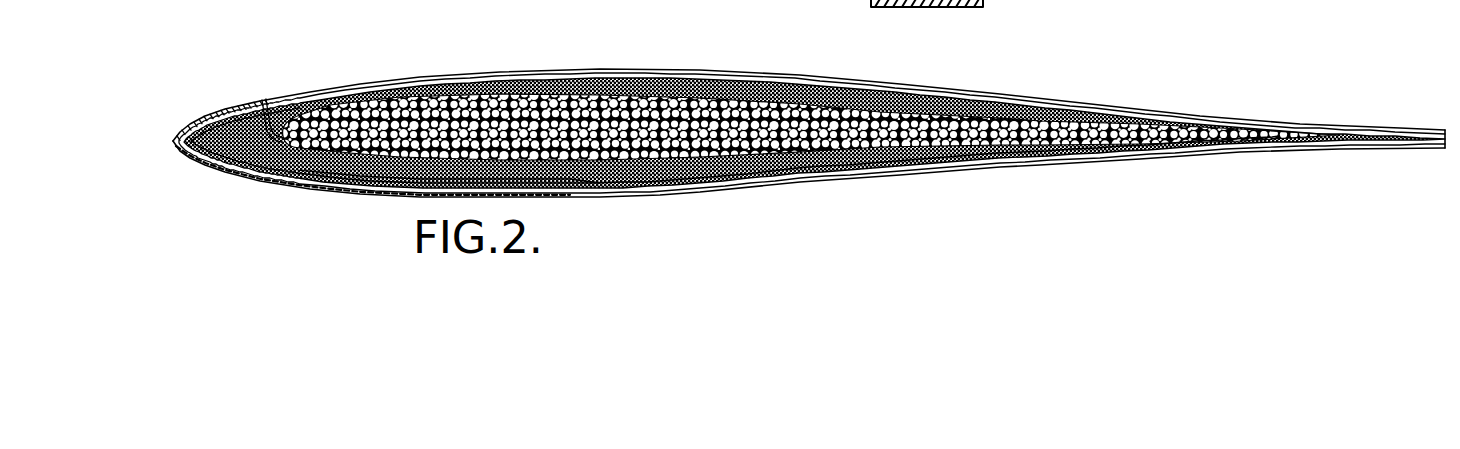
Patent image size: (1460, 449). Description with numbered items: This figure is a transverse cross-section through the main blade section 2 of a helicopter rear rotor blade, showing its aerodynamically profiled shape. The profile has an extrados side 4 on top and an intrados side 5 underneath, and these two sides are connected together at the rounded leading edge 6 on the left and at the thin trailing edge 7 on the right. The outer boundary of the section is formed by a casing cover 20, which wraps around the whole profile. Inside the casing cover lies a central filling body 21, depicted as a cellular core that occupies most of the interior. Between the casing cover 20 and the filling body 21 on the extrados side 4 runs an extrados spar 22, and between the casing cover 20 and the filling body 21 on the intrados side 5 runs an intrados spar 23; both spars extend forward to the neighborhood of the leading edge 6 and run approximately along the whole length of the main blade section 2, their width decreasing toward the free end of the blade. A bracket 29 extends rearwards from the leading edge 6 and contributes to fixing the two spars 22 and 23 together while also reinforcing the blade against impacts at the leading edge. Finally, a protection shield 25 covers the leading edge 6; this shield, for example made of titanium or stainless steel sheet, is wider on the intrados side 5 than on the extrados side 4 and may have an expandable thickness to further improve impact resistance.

The main blade section 2 is at (1150, 107).
The extrados side 4 is at (795, 73).
The intrados side 5 is at (968, 170).
The leading edge 6 is at (172, 141).
The trailing edge 7 is at (1445, 130).
The casing cover 20 is at (687, 82).
The central filling body 21 is at (1080, 147).
The extrados spar 22 is at (385, 95).
The intrados spar 23 is at (893, 158).
The protection shield 25 is at (273, 187).
The bracket 29 is at (273, 130).